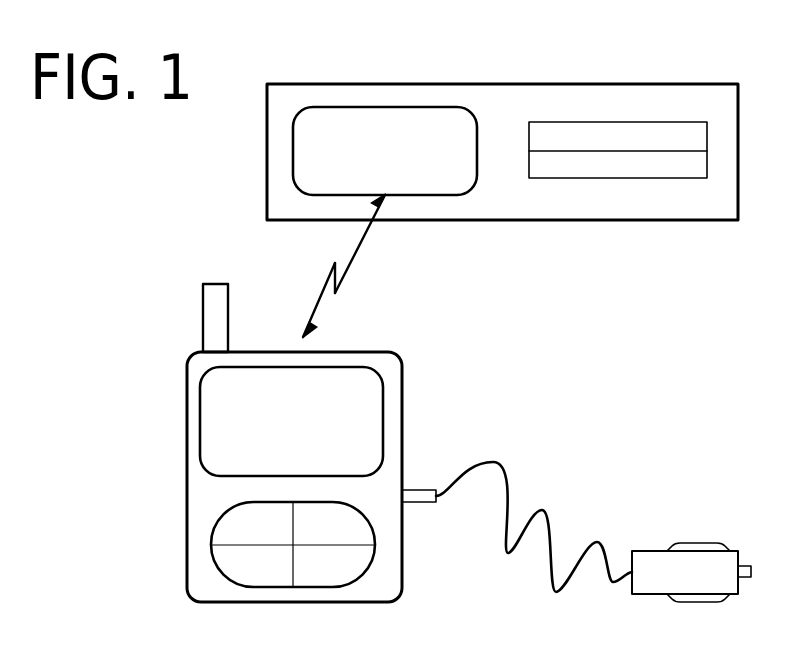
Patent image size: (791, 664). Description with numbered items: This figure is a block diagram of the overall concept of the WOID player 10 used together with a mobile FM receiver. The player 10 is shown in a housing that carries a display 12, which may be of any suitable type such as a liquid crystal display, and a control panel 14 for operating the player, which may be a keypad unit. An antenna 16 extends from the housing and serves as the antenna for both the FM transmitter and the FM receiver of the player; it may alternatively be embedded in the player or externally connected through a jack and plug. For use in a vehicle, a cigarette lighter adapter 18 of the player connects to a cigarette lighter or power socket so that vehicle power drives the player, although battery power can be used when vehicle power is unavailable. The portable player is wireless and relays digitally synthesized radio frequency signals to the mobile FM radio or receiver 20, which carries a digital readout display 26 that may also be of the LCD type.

The WOID player 10 is at (186, 478).
The display 12 is at (377, 415).
The control panel 14 is at (263, 578).
The antenna 16 is at (215, 293).
The cigarette lighter adapter 18 is at (652, 594).
The mobile FM radio or receiver 20 is at (506, 78).
The digital readout display 26 is at (305, 152).